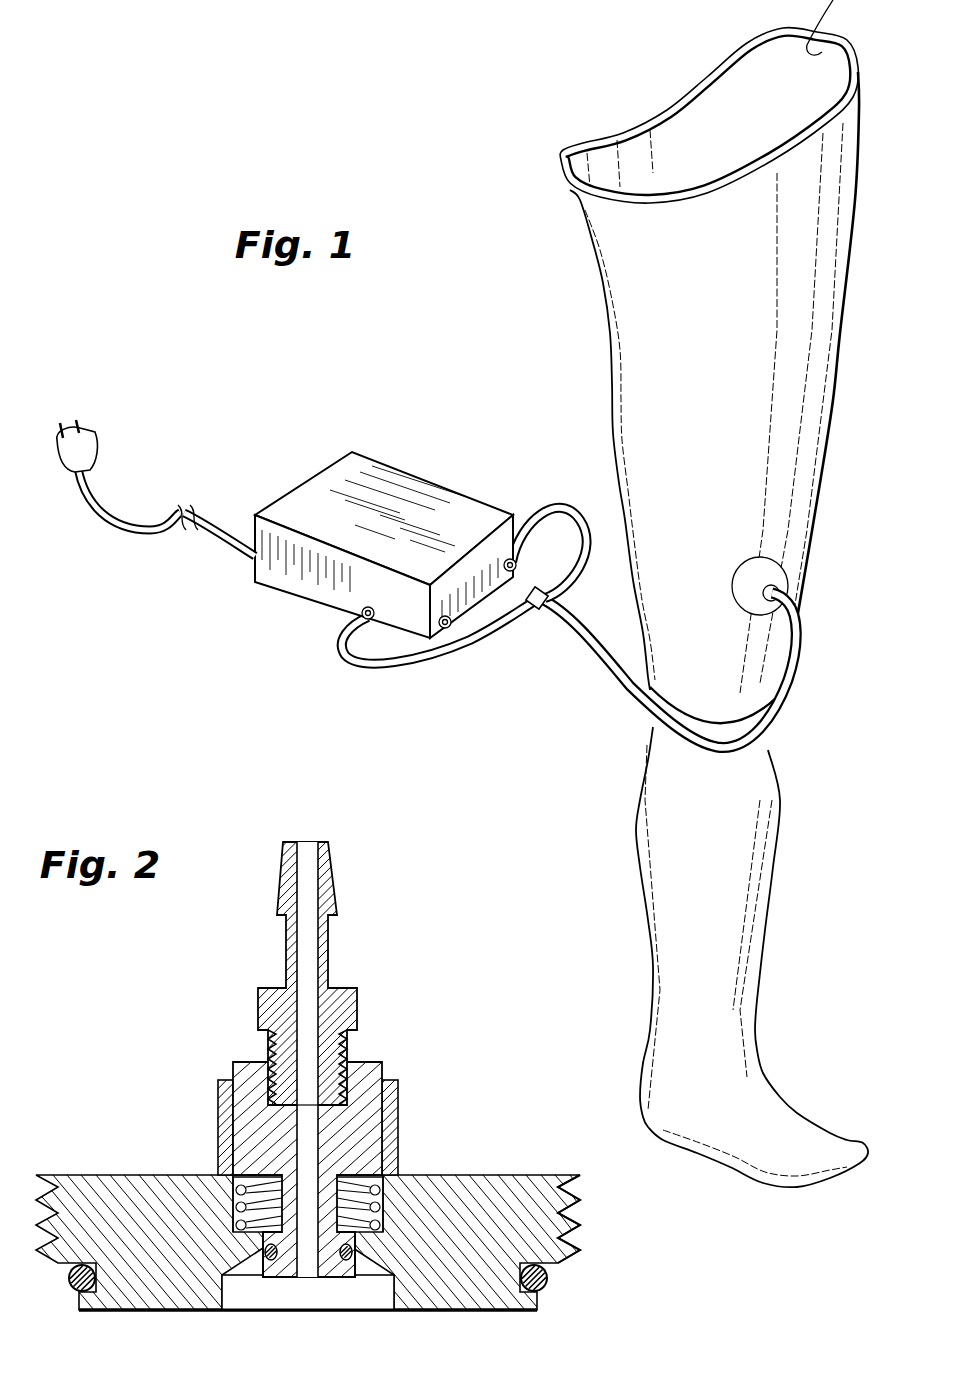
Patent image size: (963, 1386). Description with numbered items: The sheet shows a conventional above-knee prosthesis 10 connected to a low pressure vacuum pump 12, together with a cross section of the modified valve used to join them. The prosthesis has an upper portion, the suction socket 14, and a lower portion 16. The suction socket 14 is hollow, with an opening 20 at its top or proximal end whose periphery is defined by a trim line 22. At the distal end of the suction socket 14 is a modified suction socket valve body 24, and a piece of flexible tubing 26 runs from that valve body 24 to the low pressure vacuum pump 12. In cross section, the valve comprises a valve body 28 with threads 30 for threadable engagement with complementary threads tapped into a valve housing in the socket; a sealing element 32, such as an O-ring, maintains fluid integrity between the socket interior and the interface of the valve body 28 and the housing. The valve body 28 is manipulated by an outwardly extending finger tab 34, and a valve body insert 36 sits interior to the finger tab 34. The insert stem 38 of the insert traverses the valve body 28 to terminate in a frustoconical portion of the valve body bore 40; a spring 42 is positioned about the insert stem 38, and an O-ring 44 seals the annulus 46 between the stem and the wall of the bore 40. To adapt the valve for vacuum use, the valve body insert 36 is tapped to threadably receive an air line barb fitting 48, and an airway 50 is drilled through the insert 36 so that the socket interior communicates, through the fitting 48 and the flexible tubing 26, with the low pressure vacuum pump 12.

In FIG. 1, the above-knee prosthesis 10 is at (580, 359).
In FIG. 1, the low pressure vacuum pump 12 is at (432, 500).
In FIG. 1, the suction socket 14 is at (846, 385).
In FIG. 1, the lower portion 16 is at (775, 882).
In FIG. 1, the opening 20 is at (713, 131).
In FIG. 1, the trim line 22 is at (562, 152).
In FIG. 1, the modified suction socket valve body 24 is at (772, 568).
In FIG. 1, the flexible tubing 26 is at (598, 665).
In FIG. 2, the valve body 28 is at (478, 1195).
In FIG. 2, the threads 30 is at (578, 1238).
In FIG. 2, the sealing element 32 is at (548, 1285).
In FIG. 2, the finger tab 34 is at (218, 1110).
In FIG. 2, the valve body insert 36 is at (365, 1078).
In FIG. 2, the insert stem 38 is at (378, 1192).
In FIG. 2, the valve body bore 40 is at (375, 1285).
In FIG. 2, the spring 42 is at (235, 1185).
In FIG. 2, the O-ring 44 is at (266, 1245).
In FIG. 2, the annulus 46 is at (268, 1240).
In FIG. 2, the air line barb fitting 48 is at (336, 882).
In FIG. 2, the airway 50 is at (310, 1280).